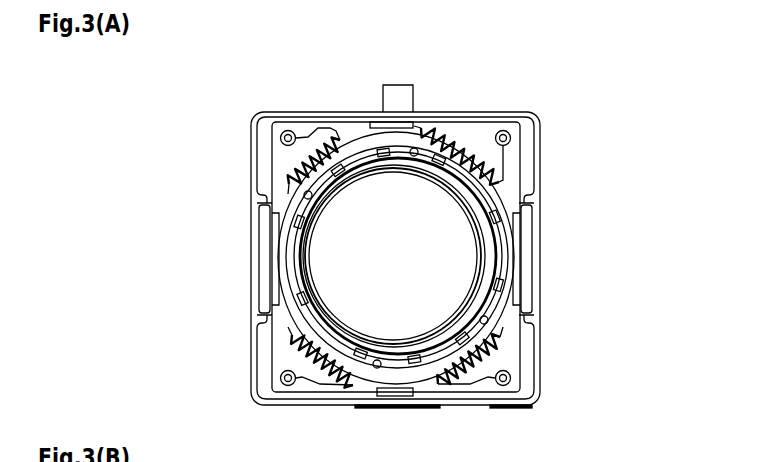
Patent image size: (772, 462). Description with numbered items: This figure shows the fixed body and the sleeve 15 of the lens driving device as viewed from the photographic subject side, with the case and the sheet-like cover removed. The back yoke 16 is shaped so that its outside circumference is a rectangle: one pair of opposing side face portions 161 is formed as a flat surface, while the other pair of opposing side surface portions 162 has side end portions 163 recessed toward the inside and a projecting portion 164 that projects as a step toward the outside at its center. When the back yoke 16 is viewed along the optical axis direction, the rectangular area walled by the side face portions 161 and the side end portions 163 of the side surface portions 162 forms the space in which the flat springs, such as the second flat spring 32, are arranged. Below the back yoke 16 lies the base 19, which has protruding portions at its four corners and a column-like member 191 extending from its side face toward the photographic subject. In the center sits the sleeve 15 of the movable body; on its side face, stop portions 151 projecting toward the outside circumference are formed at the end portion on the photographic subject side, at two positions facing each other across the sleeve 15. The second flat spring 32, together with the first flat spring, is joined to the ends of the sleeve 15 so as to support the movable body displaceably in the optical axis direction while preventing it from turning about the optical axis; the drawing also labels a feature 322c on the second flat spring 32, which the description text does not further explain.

The sleeve 15 is at (500, 262).
The back yoke 16 is at (456, 111).
The base 19 is at (533, 163).
The second flat spring 32 is at (507, 313).
The stop portion 151 is at (264, 278).
The side face portion 161 is at (316, 112).
The side surface portion 162 is at (429, 257).
The side end portion 163 is at (272, 157).
The projecting portion 164 is at (429, 259).
The column-like member 191 is at (400, 84).
The pin 322c is at (413, 156).